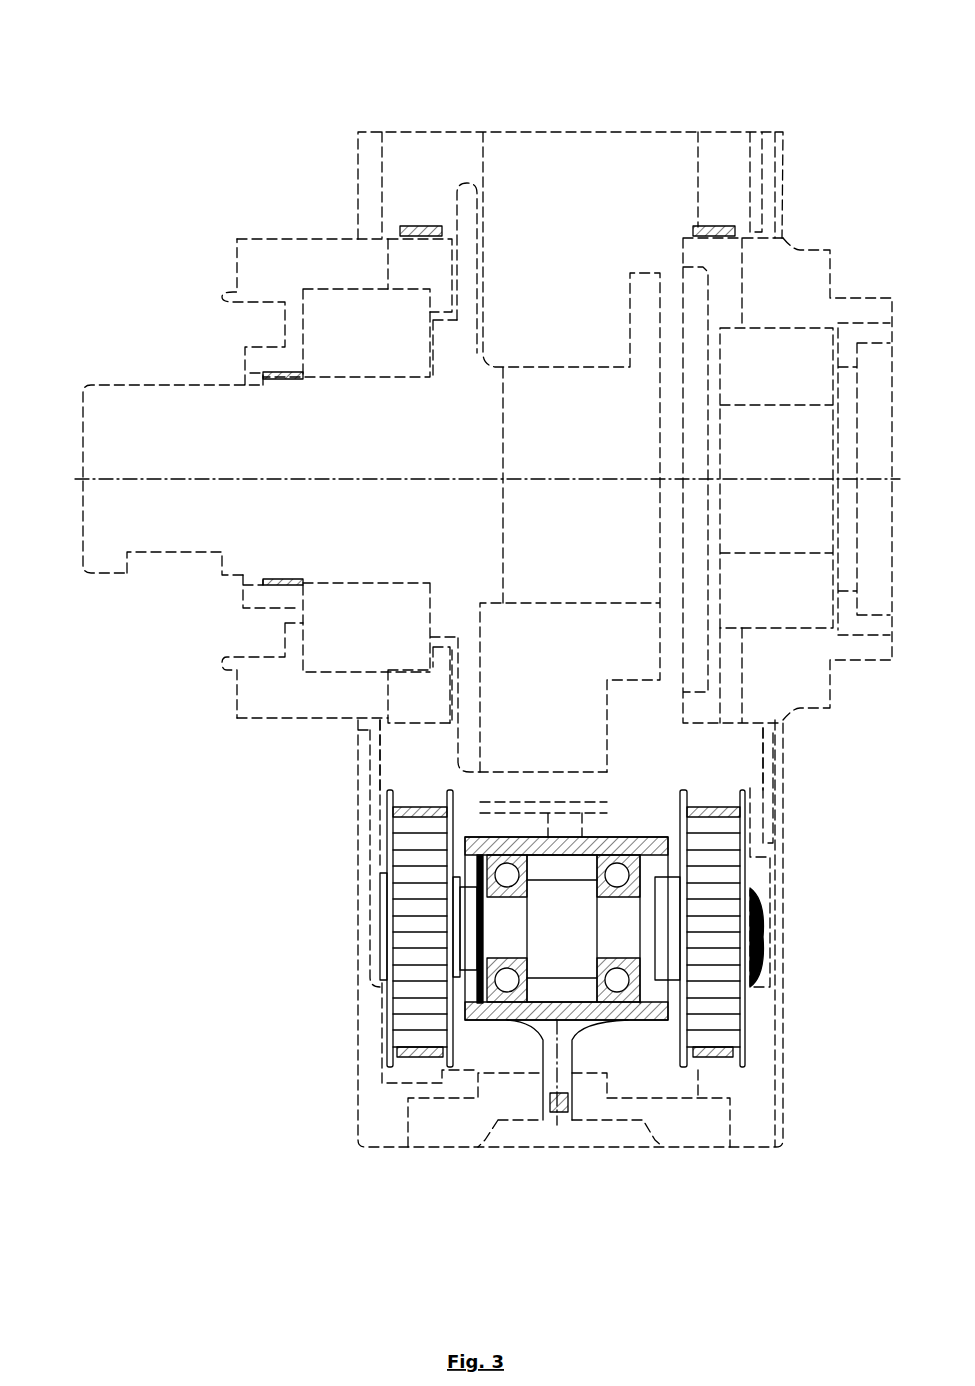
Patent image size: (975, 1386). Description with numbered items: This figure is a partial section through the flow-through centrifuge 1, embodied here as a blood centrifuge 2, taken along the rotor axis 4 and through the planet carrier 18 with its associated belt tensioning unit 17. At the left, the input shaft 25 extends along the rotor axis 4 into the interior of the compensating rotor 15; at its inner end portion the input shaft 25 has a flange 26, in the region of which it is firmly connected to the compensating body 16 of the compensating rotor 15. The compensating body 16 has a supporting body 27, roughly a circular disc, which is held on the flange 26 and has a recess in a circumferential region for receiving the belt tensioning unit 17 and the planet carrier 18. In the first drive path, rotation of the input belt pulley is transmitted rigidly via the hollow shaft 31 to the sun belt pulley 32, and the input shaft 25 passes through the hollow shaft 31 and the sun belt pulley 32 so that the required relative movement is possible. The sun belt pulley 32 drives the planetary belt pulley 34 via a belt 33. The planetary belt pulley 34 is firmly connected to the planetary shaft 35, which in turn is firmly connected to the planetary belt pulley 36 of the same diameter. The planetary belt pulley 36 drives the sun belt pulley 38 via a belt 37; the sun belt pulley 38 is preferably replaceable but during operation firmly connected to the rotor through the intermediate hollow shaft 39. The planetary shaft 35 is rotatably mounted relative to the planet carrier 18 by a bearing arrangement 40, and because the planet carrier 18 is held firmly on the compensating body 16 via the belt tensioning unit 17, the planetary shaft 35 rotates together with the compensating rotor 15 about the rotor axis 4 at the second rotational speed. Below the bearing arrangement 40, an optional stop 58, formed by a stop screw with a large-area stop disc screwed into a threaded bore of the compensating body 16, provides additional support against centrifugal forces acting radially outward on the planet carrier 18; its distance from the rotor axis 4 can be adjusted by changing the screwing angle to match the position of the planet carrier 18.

The flow-through centrifuge 1 is at (468, 613).
The blood centrifuge 2 is at (245, 104).
The rotor axis 4 is at (133, 478).
The compensating rotor 15 is at (570, 484).
The compensating body 16 is at (570, 484).
The belt tensioning unit 17 is at (318, 1023).
The planet carrier 18 is at (628, 1010).
The input shaft 25 is at (163, 518).
The flange 26 is at (468, 722).
The supporting body 27 is at (570, 484).
The hollow shaft 31 is at (347, 481).
The sun belt pulley 32 is at (420, 474).
The belt 33 is at (420, 768).
The planetary belt pulley 34 is at (393, 1003).
The planetary shaft 35 is at (570, 928).
The planetary belt pulley 36 is at (745, 993).
The belt 37 is at (715, 768).
The sun belt pulley 38 is at (733, 474).
The hollow shaft 39 is at (806, 479).
The bearing arrangement 40 is at (488, 1073).
The stop 58 is at (577, 1050).